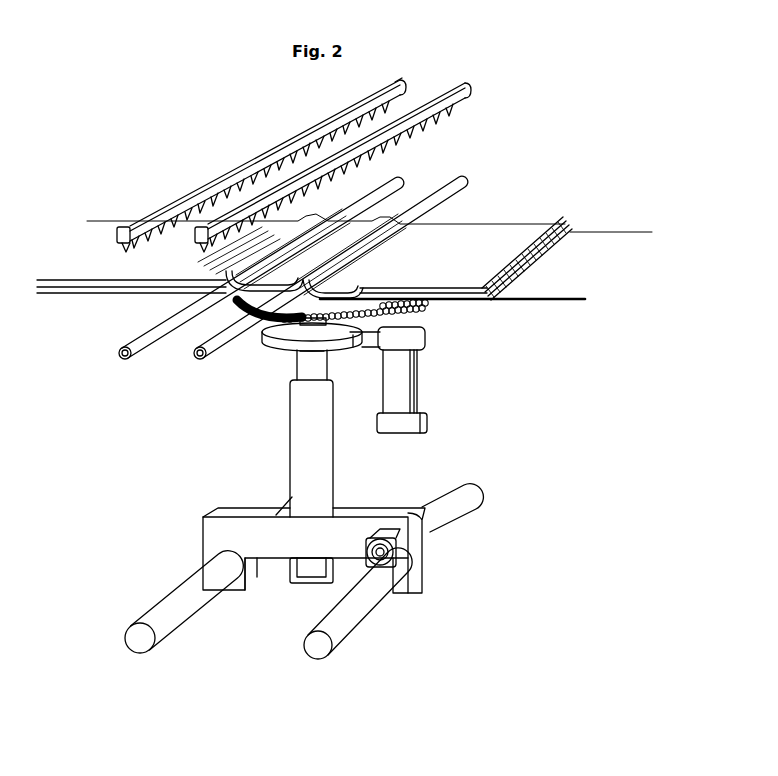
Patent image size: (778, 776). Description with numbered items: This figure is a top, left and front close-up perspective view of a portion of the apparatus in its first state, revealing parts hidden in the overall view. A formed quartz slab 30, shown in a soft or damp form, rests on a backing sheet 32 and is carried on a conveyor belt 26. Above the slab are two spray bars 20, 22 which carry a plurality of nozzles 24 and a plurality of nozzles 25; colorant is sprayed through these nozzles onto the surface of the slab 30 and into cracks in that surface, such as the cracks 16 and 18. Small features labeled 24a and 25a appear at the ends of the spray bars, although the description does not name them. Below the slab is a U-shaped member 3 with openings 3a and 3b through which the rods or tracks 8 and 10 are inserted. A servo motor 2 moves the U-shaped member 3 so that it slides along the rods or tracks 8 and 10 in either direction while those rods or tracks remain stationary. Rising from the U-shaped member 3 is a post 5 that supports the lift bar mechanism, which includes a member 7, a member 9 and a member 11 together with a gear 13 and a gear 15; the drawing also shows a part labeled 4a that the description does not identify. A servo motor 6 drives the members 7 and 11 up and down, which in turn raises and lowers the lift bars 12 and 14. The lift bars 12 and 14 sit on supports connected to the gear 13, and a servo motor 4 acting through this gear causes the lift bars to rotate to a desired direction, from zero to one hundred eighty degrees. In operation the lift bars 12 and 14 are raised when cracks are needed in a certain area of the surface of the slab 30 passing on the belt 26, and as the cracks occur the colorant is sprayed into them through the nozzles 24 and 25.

The servo motor 2 is at (396, 552).
The U-shaped member 3 is at (356, 527).
The opening 3a is at (202, 556).
The opening 3b is at (415, 593).
The servo motor 4 is at (428, 408).
The post head 4a is at (430, 331).
The post 5 is at (290, 440).
The servo motor 6 is at (293, 588).
The member 7 is at (296, 374).
The rod or track 8 is at (160, 601).
The member 9 is at (268, 347).
The rod or track 10 is at (345, 626).
The member 11 is at (331, 346).
The lift bar 12 is at (139, 360).
The gear 13 is at (426, 345).
The lift bar 14 is at (214, 360).
The gear 15 is at (430, 311).
The crack 16 is at (325, 212).
The crack 18 is at (388, 217).
The spray bar 20 is at (388, 90).
The spray bar 22 is at (453, 113).
The nozzles 24 is at (412, 94).
The bar foot 24a is at (130, 282).
The nozzles 25 is at (473, 98).
The bar foot 25a is at (205, 280).
The conveyor belt 26 is at (595, 238).
The formed quartz slab 30 is at (92, 232).
The backing sheet 32 is at (583, 220).